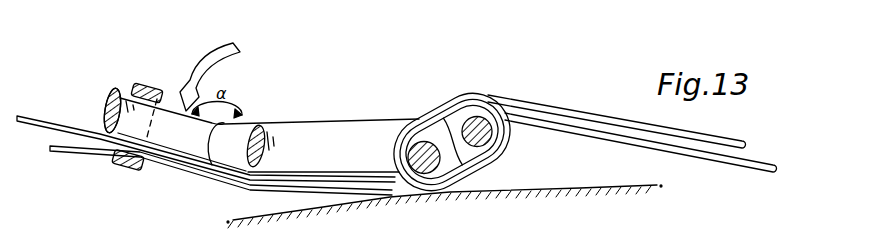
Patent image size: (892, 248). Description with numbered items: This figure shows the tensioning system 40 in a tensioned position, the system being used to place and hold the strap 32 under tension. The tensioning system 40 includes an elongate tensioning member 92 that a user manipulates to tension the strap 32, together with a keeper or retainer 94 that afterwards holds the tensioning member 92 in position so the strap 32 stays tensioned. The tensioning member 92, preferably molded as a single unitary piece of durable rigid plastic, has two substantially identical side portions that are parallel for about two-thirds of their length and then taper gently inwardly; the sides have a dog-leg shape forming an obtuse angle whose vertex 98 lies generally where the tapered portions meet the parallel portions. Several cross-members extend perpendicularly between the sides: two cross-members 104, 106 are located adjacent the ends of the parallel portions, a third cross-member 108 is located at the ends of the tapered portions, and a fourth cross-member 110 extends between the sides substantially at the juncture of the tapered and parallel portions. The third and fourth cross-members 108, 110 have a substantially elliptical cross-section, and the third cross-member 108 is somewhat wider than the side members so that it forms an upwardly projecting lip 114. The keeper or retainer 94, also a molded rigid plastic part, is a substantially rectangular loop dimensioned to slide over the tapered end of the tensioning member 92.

The strap 32 is at (728, 142).
The tensioning system 40 is at (474, 66).
The tensioning member 92 is at (310, 119).
The keeper or retainer 94 is at (148, 87).
The vertex 98 is at (183, 169).
The cross-member 104 is at (481, 128).
The cross-member 106 is at (423, 168).
The third cross-member 108 is at (106, 108).
The fourth cross-member 110 is at (233, 180).
The upwardly projecting lip 114 is at (116, 90).